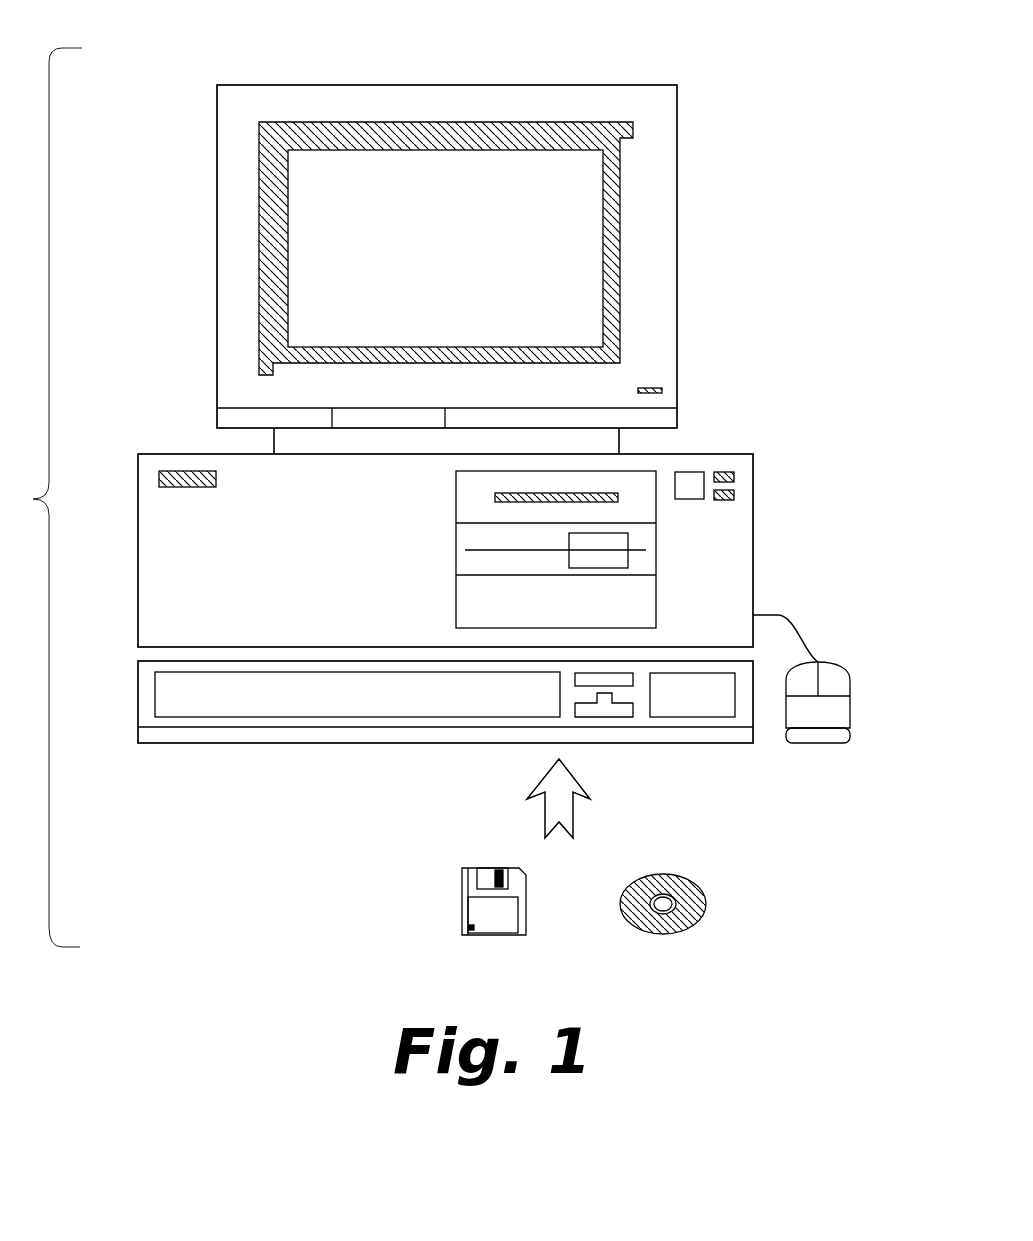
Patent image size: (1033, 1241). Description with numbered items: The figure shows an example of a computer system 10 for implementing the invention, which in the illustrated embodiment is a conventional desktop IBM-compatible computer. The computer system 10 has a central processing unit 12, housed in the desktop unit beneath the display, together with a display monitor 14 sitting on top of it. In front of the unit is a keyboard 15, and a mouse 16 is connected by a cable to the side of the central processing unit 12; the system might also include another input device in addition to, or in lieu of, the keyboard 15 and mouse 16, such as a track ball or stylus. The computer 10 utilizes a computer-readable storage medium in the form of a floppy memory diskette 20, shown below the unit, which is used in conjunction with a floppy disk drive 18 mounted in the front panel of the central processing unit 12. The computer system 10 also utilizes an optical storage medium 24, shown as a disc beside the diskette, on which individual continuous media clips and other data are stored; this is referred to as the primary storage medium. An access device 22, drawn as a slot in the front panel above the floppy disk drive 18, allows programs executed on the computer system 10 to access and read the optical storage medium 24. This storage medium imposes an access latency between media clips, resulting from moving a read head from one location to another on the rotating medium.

The computer system 10 is at (632, 50).
The central processing unit 12 is at (494, 539).
The display monitor 14 is at (656, 213).
The keyboard 15 is at (163, 695).
The mouse 16 is at (829, 680).
The floppy disk drive 18 is at (470, 542).
The floppy memory diskette 20 is at (478, 903).
The access device 22 is at (477, 503).
The optical storage medium 24 is at (688, 886).